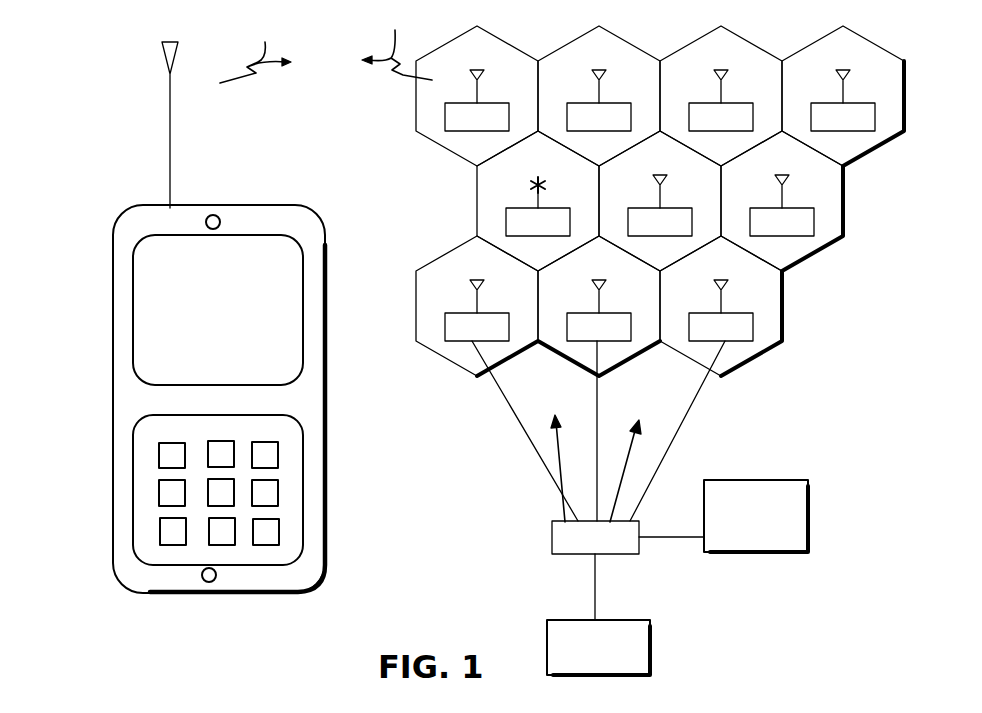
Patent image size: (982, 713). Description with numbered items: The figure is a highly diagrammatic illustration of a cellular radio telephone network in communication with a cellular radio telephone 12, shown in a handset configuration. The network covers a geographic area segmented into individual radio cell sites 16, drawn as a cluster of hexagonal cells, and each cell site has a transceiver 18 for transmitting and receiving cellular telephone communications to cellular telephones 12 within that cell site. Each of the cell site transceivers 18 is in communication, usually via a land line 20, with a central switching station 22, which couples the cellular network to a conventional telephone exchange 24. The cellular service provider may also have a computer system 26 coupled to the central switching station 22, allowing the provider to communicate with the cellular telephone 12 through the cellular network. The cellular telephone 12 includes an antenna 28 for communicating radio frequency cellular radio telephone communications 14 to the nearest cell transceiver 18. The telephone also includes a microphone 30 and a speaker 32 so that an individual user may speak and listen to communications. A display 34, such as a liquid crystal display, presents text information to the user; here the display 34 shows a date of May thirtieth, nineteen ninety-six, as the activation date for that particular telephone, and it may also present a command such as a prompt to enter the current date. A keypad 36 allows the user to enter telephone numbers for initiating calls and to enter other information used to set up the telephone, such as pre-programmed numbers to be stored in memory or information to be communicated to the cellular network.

The cellular radio telephone 12 is at (100, 543).
The radio frequency cellular radio telephone communications 14 is at (326, 46).
The radio cell sites 16 is at (788, 284).
The transceiver 18 is at (732, 329).
The land line 20 is at (673, 478).
The central switching station 22 is at (557, 532).
The telephone exchange 24 is at (641, 653).
The computer system 26 is at (730, 553).
The antenna 28 is at (170, 167).
The microphone 30 is at (208, 582).
The speaker 32 is at (206, 222).
The display 34 is at (133, 333).
The keypad 36 is at (133, 478).